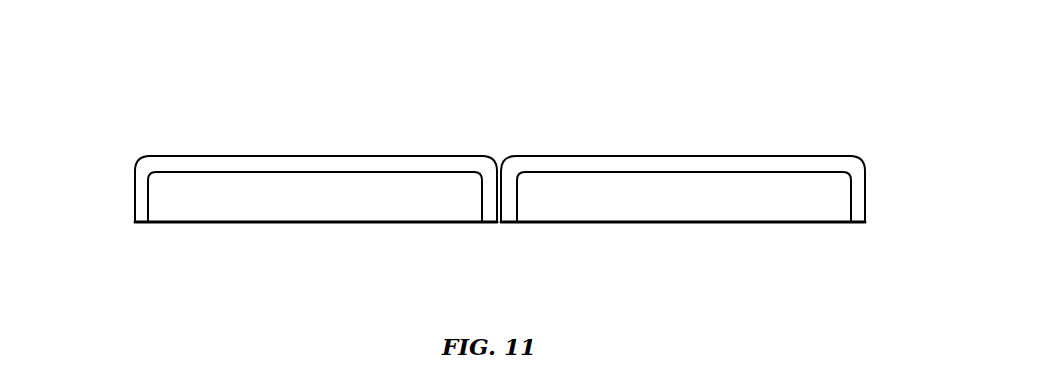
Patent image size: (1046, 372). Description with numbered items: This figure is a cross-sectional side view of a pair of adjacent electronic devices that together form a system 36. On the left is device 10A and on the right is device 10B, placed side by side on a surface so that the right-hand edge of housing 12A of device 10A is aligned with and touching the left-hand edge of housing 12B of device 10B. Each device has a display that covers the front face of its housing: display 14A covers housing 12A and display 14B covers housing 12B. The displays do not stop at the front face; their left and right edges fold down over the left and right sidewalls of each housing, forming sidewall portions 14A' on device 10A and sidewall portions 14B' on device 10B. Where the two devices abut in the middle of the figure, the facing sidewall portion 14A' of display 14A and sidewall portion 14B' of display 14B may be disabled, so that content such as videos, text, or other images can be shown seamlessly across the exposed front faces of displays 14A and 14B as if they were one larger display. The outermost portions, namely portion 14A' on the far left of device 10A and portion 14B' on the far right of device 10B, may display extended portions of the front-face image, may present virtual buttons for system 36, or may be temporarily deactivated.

The system 36 is at (538, 63).
The first electronic device 10A is at (336, 124).
The second electronic device 10B is at (648, 124).
The display of first device 14A is at (316, 164).
The sidewall portion of first display 14A' is at (277, 230).
The housing of first device 12A is at (250, 207).
The display of second device 14B is at (683, 164).
The sidewall portion of second display 14B' is at (720, 230).
The housing of second device 12B is at (652, 207).